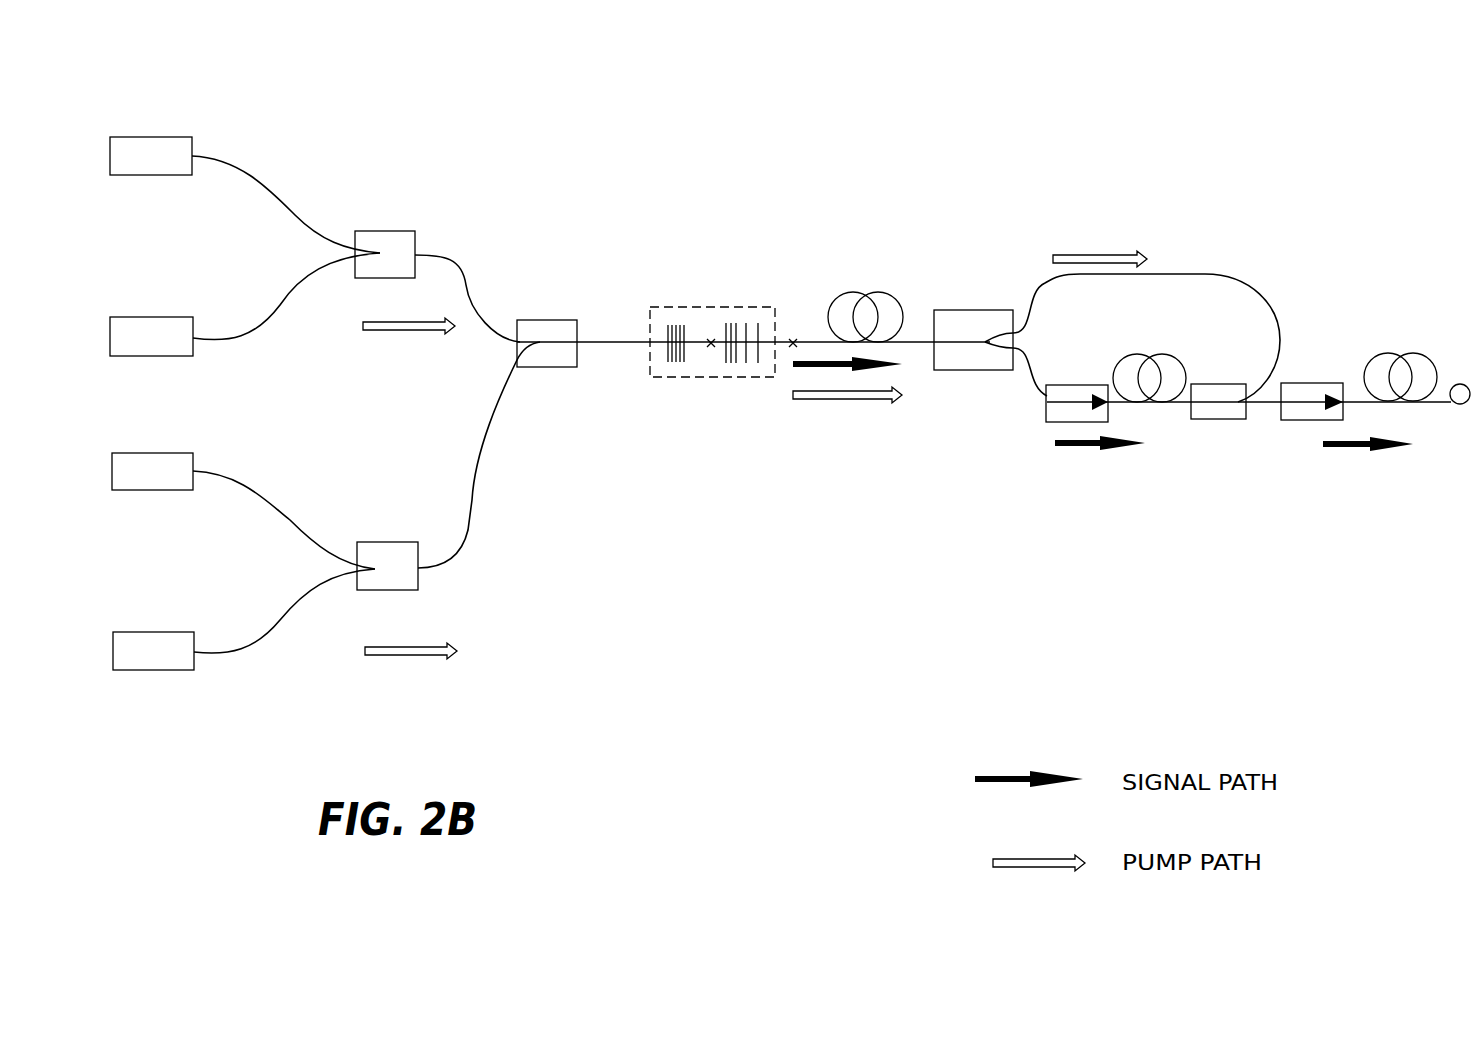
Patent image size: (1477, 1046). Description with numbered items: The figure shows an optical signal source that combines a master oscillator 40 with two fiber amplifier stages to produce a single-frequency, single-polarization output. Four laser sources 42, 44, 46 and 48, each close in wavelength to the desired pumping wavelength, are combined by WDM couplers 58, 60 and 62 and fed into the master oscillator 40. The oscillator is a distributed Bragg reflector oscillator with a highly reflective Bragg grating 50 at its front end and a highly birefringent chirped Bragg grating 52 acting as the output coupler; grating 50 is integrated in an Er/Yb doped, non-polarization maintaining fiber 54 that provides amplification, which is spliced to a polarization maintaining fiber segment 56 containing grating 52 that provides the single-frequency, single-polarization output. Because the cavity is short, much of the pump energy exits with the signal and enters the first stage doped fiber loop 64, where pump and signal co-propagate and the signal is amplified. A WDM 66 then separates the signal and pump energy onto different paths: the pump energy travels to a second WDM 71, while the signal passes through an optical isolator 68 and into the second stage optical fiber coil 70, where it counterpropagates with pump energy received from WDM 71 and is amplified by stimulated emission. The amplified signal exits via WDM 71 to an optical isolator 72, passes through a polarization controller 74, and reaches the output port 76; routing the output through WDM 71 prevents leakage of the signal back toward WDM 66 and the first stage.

The master oscillator 40 is at (688, 380).
The laser source 42 is at (138, 134).
The laser source 44 is at (138, 314).
The laser source 46 is at (140, 450).
The laser source 48 is at (140, 630).
The highly reflective Bragg grating 50 is at (667, 319).
The highly birefringent Bragg grating 52 is at (731, 319).
The Er/Yb doped fiber 54 is at (698, 345).
The polarization maintaining fiber segment 56 is at (768, 346).
The WDM coupler 58 is at (388, 227).
The WDM coupler 60 is at (362, 539).
The WDM coupler 62 is at (548, 317).
The doped fiber loop 64 is at (868, 289).
The WDM 66 is at (955, 307).
The optical isolator 68 is at (1056, 382).
The second stage optical fiber coil 70 is at (1143, 352).
The WDM 71 is at (1221, 422).
The optical isolator 72 is at (1290, 381).
The polarization controller 74 is at (1414, 352).
The output port 76 is at (1461, 407).